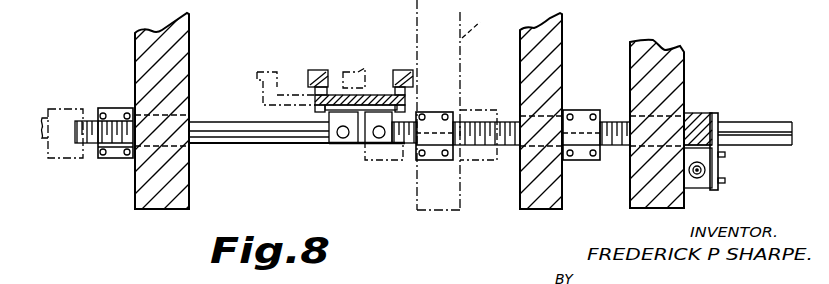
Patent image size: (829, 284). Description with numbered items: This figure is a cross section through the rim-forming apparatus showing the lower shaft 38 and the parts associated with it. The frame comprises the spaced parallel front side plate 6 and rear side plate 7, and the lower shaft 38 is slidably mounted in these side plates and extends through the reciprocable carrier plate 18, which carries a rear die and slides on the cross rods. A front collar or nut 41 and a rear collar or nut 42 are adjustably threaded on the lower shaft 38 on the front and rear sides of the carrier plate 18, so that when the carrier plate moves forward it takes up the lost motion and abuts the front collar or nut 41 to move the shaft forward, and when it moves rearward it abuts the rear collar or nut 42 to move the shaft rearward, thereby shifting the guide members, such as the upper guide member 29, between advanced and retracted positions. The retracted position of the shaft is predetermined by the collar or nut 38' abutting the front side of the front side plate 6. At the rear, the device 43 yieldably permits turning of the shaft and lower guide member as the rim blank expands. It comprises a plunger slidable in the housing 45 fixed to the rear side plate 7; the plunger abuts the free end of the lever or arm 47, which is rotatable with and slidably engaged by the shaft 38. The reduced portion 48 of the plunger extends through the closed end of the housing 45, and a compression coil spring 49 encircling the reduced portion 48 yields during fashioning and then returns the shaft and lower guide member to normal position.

The front side plate 6 is at (168, 200).
The rear side plate 7 is at (684, 66).
The carrier plate 18 is at (527, 67).
The upper guide member 29 is at (362, 73).
The lower shaft 38 is at (259, 147).
The collar or nut 38' is at (104, 154).
The front collar or nut 41 is at (372, 160).
The rear collar or nut 42 is at (487, 160).
The device 43 is at (707, 115).
The housing 45 is at (698, 185).
The lever or arm 47 is at (696, 108).
The reduced portion 48 is at (718, 167).
The compression coil spring 49 is at (723, 182).